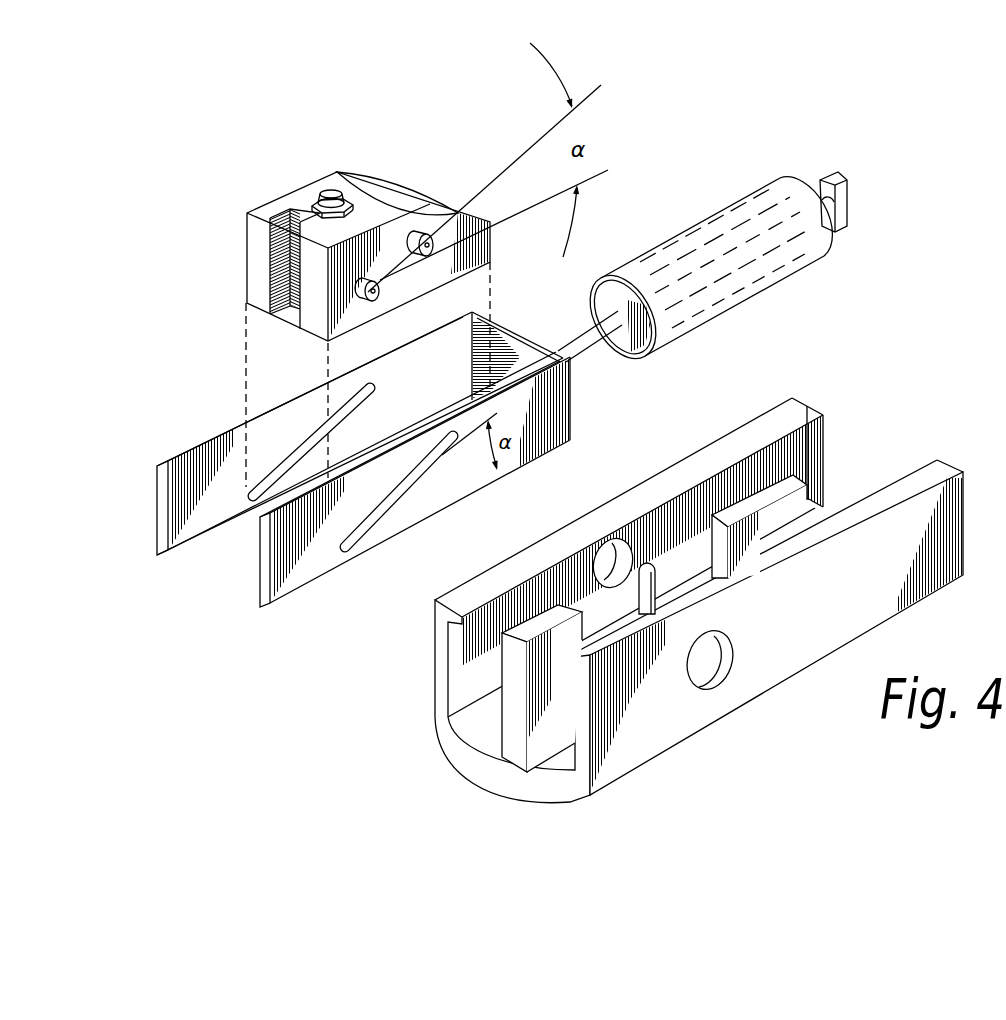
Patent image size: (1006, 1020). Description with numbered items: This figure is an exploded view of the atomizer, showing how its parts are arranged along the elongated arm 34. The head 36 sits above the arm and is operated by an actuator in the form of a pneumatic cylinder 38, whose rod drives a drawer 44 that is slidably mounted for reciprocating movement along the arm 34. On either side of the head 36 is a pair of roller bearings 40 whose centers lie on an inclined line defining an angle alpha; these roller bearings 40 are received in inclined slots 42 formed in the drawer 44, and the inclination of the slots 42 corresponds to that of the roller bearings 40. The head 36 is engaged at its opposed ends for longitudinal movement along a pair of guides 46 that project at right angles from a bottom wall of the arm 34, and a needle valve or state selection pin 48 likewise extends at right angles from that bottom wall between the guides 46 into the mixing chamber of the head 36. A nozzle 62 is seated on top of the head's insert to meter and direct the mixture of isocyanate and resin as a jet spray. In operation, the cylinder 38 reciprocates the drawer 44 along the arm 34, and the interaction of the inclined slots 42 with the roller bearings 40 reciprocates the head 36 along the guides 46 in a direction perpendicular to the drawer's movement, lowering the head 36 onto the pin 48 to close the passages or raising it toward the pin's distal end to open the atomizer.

The arm 34 is at (635, 730).
The head 36 is at (320, 170).
The pneumatic cylinder 38 is at (723, 247).
The roller bearings 40 is at (373, 302).
The inclined slots 42 is at (358, 406).
The drawer 44 is at (252, 568).
The guides 46 is at (515, 700).
The state selection pin 48 is at (656, 563).
The nozzle 62 is at (315, 198).